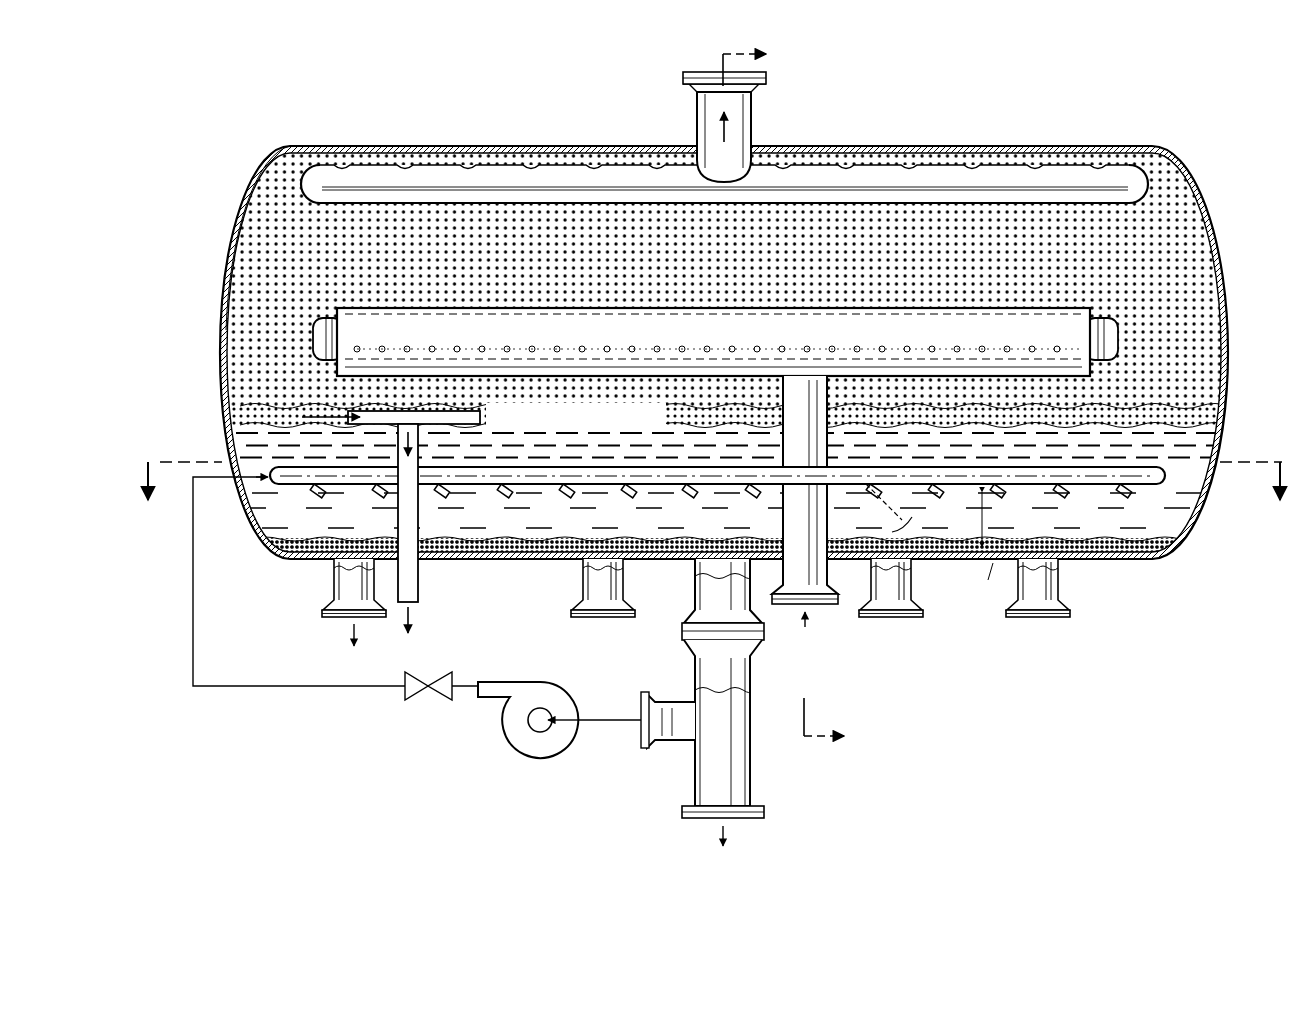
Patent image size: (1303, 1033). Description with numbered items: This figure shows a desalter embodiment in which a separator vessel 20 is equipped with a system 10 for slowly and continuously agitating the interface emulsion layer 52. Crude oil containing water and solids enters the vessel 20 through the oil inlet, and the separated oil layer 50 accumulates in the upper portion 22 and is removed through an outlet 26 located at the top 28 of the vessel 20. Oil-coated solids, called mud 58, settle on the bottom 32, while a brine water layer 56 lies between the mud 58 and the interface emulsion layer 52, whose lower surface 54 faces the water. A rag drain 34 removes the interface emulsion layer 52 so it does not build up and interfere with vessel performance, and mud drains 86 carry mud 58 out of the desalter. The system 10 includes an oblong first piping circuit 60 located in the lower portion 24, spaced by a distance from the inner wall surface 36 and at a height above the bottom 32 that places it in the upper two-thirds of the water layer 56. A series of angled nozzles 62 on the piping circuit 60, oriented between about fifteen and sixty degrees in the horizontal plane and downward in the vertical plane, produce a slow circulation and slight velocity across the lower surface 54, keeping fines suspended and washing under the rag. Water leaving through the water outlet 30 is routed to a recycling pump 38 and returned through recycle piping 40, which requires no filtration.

The system 10 is at (706, 454).
The separator vessel 20 is at (410, 137).
The upper portion 22 is at (250, 196).
The lower portion 24 is at (1205, 506).
The outlet 26 is at (697, 107).
The top 28 is at (803, 145).
The water outlet 30 is at (688, 594).
The bottom 32 is at (918, 562).
The rag drain 34 is at (418, 584).
The inner wall surface 36 is at (270, 548).
The recycling pump 38 is at (512, 738).
The recycle piping 40 is at (193, 578).
The oil layer 50 is at (1100, 218).
The interface emulsion layer 52 is at (1180, 415).
The lower surface 54 is at (1216, 434).
The water layer 56 is at (1067, 524).
The mud 58 is at (523, 560).
The first piping circuit 60 is at (530, 483).
The nozzles 62 is at (700, 492).
The mud drains 86 is at (343, 585).